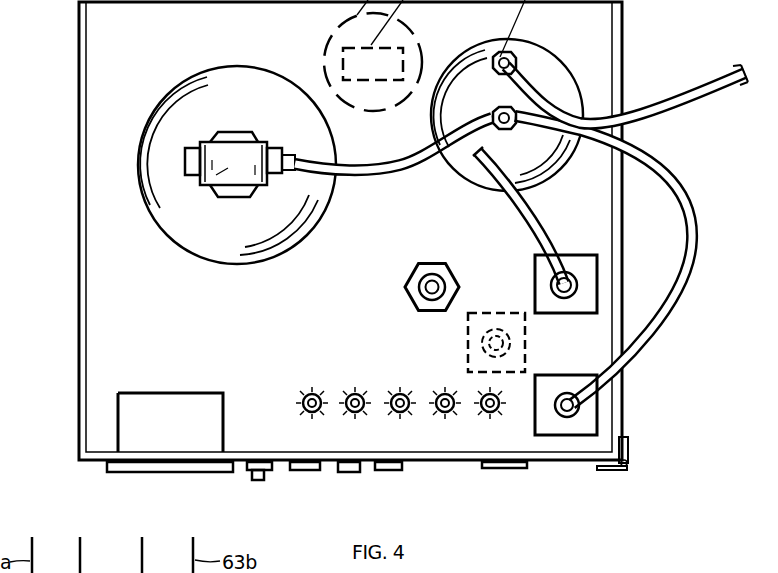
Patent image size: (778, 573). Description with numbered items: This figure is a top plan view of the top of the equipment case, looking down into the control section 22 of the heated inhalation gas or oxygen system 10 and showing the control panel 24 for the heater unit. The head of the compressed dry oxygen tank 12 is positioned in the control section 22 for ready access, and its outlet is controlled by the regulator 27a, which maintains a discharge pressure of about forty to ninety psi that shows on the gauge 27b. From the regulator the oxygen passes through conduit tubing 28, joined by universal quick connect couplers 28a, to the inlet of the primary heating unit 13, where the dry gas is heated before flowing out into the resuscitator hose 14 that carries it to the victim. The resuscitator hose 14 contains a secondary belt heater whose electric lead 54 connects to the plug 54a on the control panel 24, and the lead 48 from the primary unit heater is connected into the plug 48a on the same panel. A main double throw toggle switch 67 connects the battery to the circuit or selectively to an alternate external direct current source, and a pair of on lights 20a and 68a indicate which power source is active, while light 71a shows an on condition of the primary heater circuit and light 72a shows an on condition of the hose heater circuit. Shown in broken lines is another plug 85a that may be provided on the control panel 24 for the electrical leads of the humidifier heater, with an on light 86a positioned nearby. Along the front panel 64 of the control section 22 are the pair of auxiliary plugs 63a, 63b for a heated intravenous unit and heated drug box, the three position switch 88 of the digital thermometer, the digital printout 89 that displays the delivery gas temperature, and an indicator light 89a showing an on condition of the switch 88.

The inhalation gas or oxygen system 10 is at (603, 47).
The tank 12 is at (135, 120).
The primary heating unit 13 is at (548, 44).
The resuscitator hose 14 is at (677, 107).
The control section 22 is at (128, 276).
The control panel 24 is at (125, 312).
The regulator 27a is at (187, 161).
The gauge 27b is at (210, 181).
The conduit tubing 28 is at (388, 172).
The universal quick connect couplers 28a is at (500, 112).
The lead 48 is at (542, 217).
The plug 48a is at (578, 276).
The electric lead 54 is at (688, 186).
The plug 54a is at (567, 407).
The main double throw toggle switch 67 is at (428, 293).
The plug 85a is at (528, 345).
The "on" light 20a is at (308, 391).
The "on" light 68a is at (354, 391).
The light 71a is at (402, 391).
The light 72a is at (442, 418).
The "on" light 86a is at (492, 418).
The digital printout 89 is at (160, 475).
The three position switch 88 is at (254, 479).
The auxiliary plug 63a is at (310, 472).
The indicator light 89a is at (358, 473).
The auxiliary plug 63b is at (417, 490).
The front panel 64 is at (467, 467).